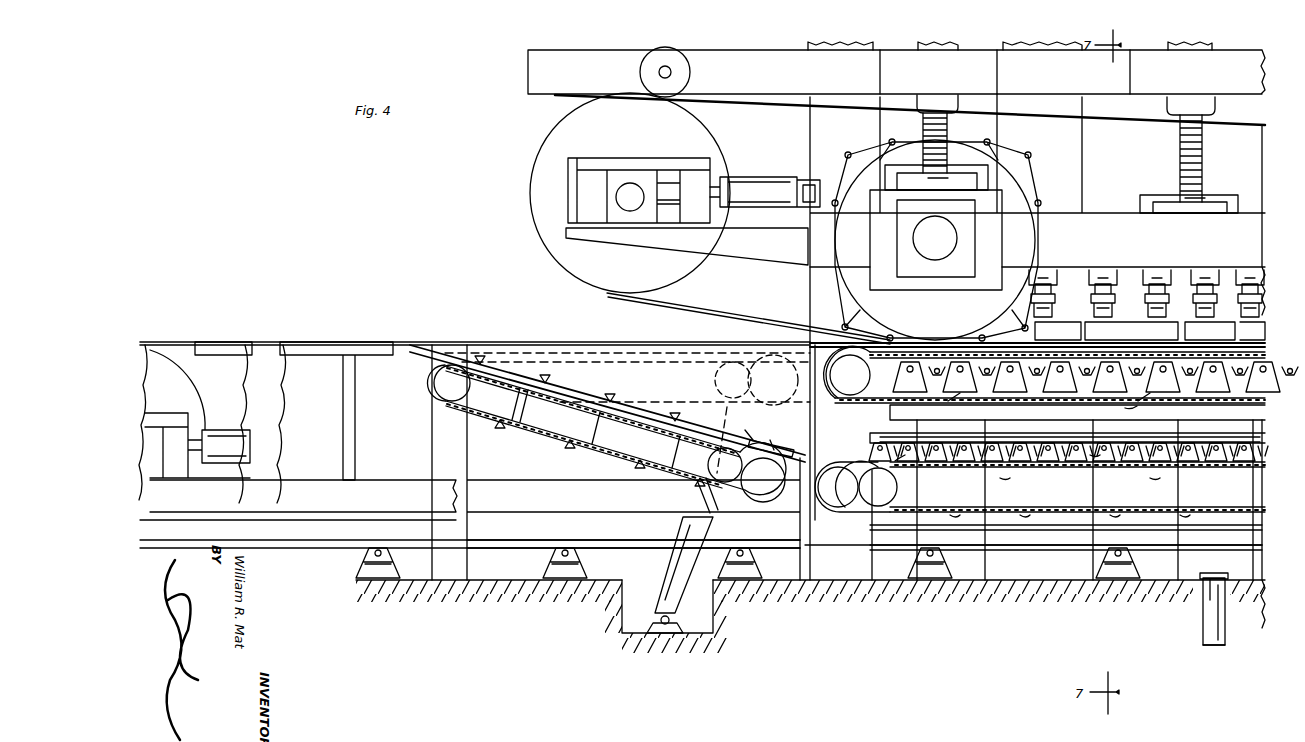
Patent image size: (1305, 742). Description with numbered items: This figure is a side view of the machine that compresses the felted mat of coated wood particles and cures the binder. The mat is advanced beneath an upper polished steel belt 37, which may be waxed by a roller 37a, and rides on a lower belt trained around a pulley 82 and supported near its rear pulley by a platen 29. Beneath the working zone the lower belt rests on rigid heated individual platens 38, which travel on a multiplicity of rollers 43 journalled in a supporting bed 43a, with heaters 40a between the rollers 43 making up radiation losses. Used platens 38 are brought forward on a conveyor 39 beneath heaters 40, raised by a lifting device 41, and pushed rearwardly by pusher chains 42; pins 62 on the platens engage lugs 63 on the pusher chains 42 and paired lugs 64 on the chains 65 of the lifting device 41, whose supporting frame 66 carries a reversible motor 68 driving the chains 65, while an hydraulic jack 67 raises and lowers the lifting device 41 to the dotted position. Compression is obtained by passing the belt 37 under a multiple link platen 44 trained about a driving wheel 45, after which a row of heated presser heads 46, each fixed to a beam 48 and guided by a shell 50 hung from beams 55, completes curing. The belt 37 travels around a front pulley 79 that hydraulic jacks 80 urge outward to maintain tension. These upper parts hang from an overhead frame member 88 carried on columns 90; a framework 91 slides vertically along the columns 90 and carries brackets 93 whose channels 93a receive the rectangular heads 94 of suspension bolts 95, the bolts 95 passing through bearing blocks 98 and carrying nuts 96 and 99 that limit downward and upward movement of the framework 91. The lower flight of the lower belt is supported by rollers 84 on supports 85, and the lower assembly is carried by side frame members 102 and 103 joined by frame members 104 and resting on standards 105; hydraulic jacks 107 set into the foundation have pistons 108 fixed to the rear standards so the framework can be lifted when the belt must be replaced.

The platen 29 is at (288, 342).
The upper polished steel belt 37 is at (1140, 124).
The roller 37a is at (690, 98).
The heated individual platens 38 is at (1258, 364).
The conveyor 39 is at (1151, 526).
The heaters 40 is at (1128, 466).
The heaters 40a is at (1035, 370).
The lifting device 41 is at (570, 425).
The pusher chains 42 is at (847, 404).
The rollers 43 is at (1179, 408).
The supporting bed 43a is at (964, 412).
The multiple link platen 44 is at (1032, 187).
The wheel 45 is at (946, 321).
The presser heads 46 is at (1130, 340).
The beam 48 is at (1255, 336).
The shell 50 is at (1260, 312).
The beams 55 is at (1066, 272).
The pins 62 is at (930, 364).
The lugs 63 is at (1105, 408).
The lugs 64 is at (670, 472).
The chains 65 is at (762, 452).
The supporting frame 66 is at (536, 413).
The hydraulic jack 67 is at (668, 585).
The reversible motor 68 is at (738, 478).
The front pulley 79 is at (647, 146).
The hydraulic jacks 80 is at (752, 185).
The pulley 82 is at (192, 392).
The rollers 84 is at (568, 553).
The supports 85 is at (566, 596).
The overhead frame member 88 is at (543, 85).
The columns 90 is at (845, 140).
The framework 91 is at (1100, 222).
The brackets 93 is at (887, 190).
The channels 93a is at (946, 176).
The heads 94 is at (910, 175).
The suspension bolts 95 is at (949, 127).
The nuts 96 is at (920, 46).
The bearing blocks 98 is at (880, 80).
The nuts 99 is at (952, 105).
The side frame member 102 is at (412, 502).
The side frame member 103 is at (544, 504).
The frame members 104 is at (1258, 425).
The standards 105 is at (1075, 583).
The hydraulic jacks 107 is at (1215, 640).
The pistons 108 is at (1226, 590).